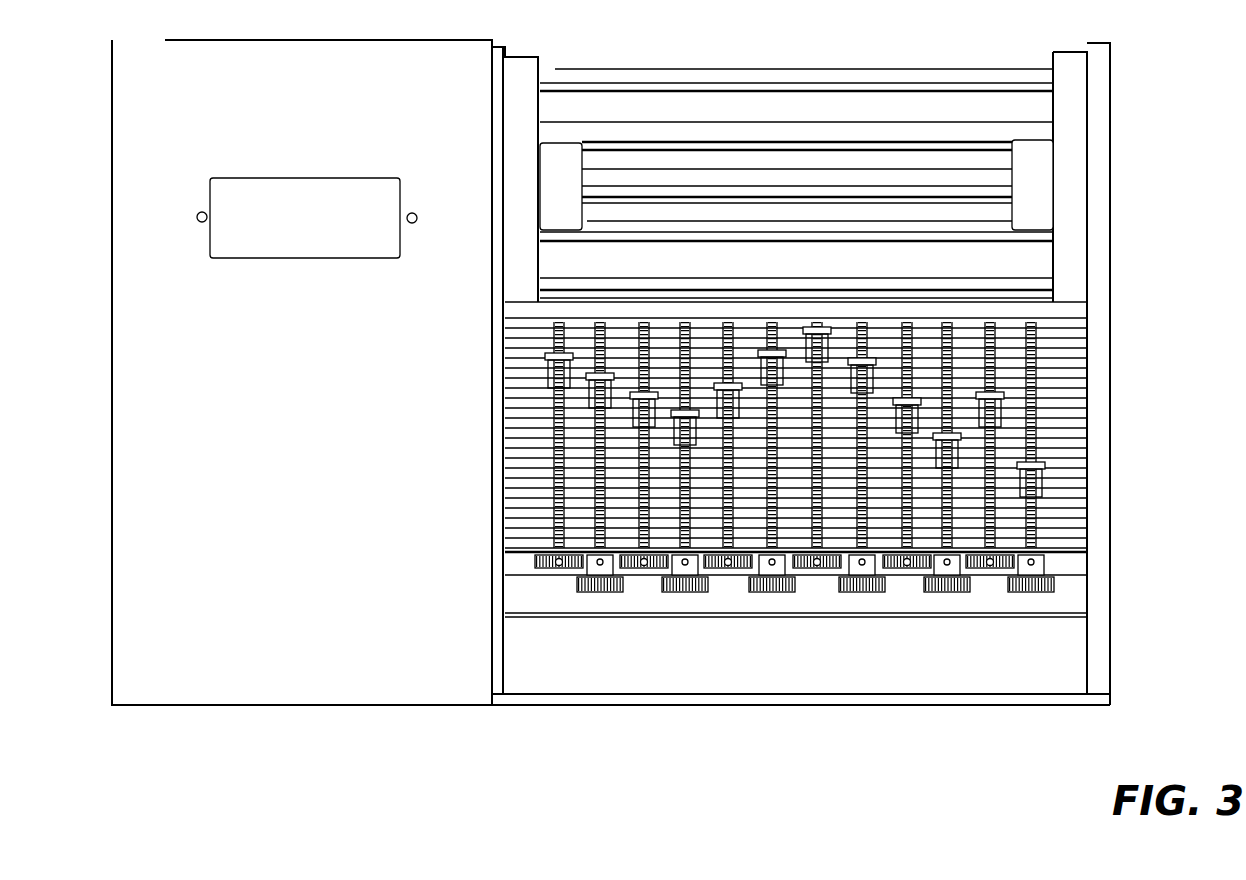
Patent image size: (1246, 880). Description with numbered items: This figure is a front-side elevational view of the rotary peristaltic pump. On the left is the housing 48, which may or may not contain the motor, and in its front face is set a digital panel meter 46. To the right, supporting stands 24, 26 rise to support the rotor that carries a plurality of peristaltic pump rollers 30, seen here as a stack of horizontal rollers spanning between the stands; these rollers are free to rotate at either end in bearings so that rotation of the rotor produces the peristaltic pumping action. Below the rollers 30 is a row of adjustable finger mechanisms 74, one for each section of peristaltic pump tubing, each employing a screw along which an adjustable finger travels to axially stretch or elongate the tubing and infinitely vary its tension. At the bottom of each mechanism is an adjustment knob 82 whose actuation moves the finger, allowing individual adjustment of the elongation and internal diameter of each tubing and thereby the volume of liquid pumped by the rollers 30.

The supporting stand 24 is at (1099, 97).
The supporting stand 26 is at (492, 98).
The peristaltic pump roller 30 is at (945, 68).
The digital panel meter 46 is at (365, 182).
The housing 48 is at (611, 372).
The adjustable finger mechanism 74 is at (556, 434).
The adjustment knob 82 is at (947, 590).